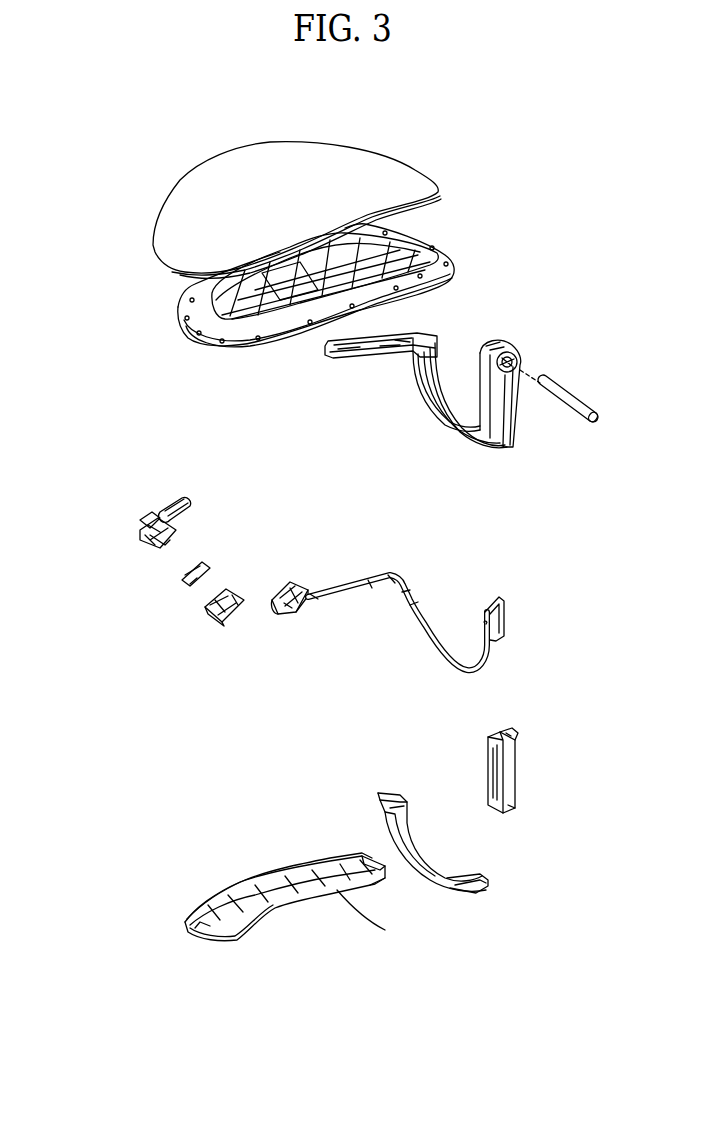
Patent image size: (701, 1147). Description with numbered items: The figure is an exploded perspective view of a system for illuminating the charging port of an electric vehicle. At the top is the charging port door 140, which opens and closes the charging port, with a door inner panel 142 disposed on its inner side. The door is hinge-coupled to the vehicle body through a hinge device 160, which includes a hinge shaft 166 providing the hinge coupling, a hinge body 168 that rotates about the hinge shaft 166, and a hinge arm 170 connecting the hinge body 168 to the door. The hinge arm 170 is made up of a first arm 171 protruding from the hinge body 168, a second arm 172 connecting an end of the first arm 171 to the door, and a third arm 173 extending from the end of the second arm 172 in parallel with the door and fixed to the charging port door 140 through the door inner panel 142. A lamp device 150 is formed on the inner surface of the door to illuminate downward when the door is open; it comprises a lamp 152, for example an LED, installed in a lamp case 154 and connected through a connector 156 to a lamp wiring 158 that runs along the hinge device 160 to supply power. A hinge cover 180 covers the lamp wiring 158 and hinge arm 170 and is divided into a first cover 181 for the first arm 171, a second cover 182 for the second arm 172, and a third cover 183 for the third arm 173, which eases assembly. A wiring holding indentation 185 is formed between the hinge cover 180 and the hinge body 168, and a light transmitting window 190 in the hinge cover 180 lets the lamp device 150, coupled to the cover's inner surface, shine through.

The charging port door 140 is at (177, 218).
The door inner panel 142 is at (440, 258).
The lamp device 150 is at (136, 571).
The lamp 152 is at (183, 573).
The lamp case 154 is at (137, 533).
The connector 156 is at (287, 582).
The lamp wiring 158 is at (343, 580).
The hinge device 160 is at (575, 262).
The hinge shaft 166 is at (565, 397).
The hinge body 168 is at (493, 341).
The hinge arm 170 is at (434, 413).
The first arm 171 is at (511, 397).
The second arm 172 is at (463, 440).
The third arm 173 is at (368, 353).
The hinge cover 180 is at (474, 804).
The first cover 181 is at (531, 744).
The second cover 182 is at (428, 860).
The third cover 183 is at (337, 890).
The wiring holding indentation 185 is at (502, 733).
The light transmitting window 190 is at (208, 905).